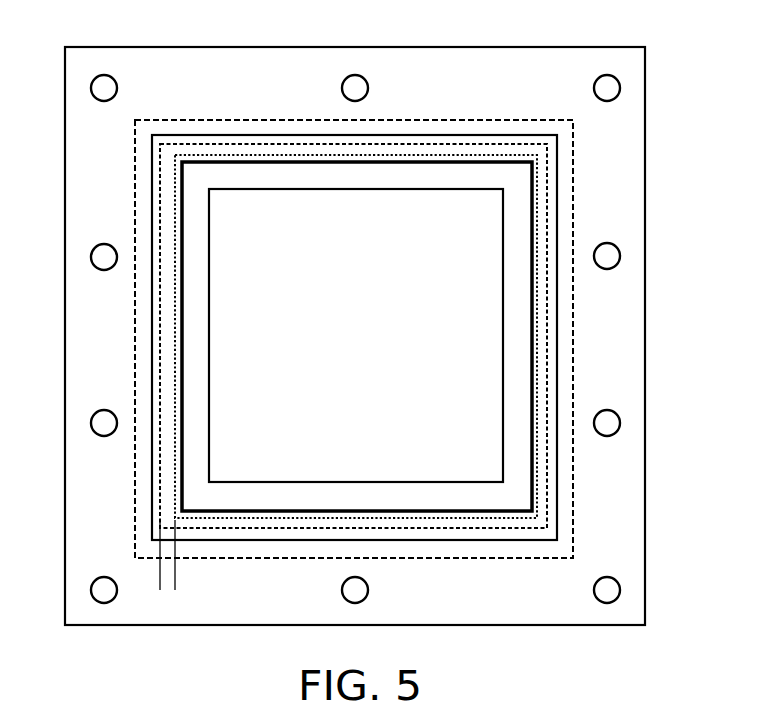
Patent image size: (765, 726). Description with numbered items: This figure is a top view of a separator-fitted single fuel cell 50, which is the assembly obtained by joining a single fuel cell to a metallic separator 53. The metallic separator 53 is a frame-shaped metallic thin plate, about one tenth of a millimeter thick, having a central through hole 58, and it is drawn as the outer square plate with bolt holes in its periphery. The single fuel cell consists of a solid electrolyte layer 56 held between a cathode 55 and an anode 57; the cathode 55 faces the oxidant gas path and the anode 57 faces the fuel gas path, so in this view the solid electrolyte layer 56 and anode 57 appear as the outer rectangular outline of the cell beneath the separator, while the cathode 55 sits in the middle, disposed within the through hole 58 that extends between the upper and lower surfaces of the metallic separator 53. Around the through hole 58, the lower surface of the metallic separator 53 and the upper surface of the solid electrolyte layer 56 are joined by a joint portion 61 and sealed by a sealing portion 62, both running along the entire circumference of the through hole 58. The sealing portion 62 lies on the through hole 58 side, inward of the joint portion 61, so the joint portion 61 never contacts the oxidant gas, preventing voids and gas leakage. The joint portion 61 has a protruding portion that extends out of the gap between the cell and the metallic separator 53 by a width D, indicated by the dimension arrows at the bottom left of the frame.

The separator-fitted single fuel cell 50 is at (364, 336).
The metallic separator 53 is at (645, 208).
The cathode 55 is at (368, 350).
The solid electrolyte layer 56 is at (354, 318).
The anode 57 is at (186, 120).
The through hole 58 is at (272, 147).
The joint portion 61 is at (408, 158).
The sealing portion 62 is at (475, 137).
The width of protrusion D is at (200, 582).